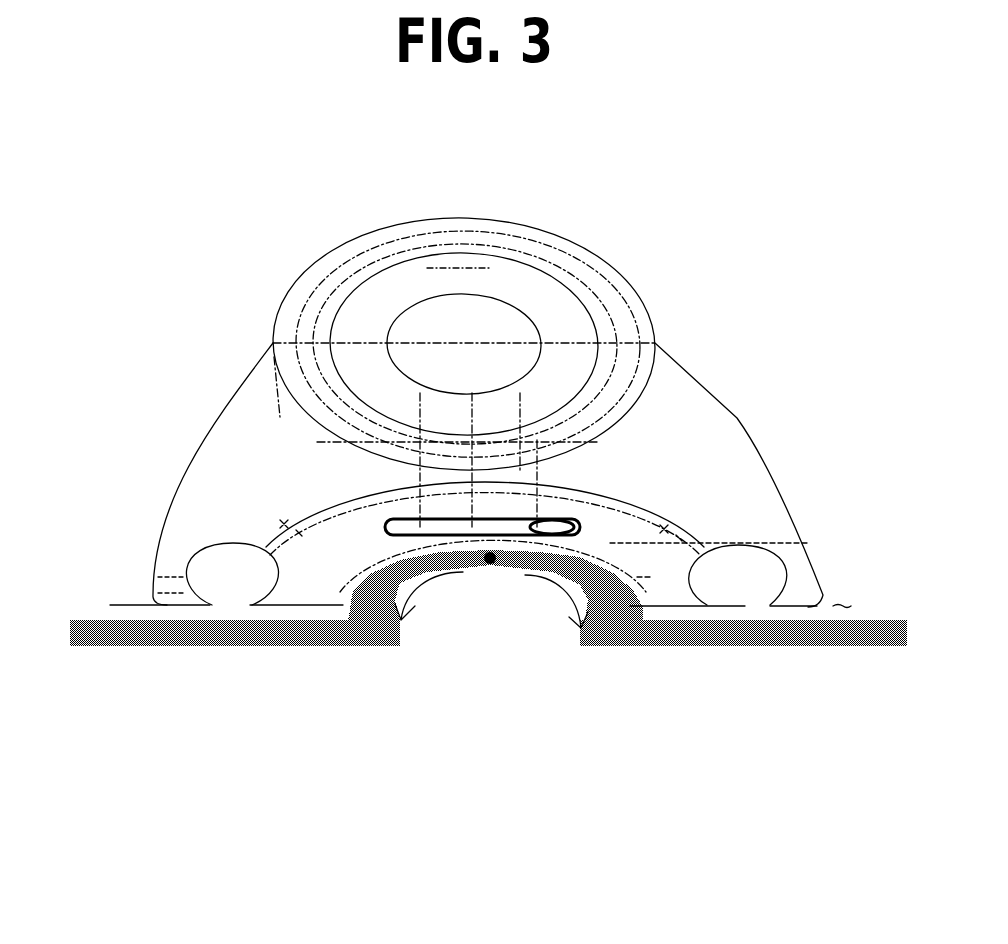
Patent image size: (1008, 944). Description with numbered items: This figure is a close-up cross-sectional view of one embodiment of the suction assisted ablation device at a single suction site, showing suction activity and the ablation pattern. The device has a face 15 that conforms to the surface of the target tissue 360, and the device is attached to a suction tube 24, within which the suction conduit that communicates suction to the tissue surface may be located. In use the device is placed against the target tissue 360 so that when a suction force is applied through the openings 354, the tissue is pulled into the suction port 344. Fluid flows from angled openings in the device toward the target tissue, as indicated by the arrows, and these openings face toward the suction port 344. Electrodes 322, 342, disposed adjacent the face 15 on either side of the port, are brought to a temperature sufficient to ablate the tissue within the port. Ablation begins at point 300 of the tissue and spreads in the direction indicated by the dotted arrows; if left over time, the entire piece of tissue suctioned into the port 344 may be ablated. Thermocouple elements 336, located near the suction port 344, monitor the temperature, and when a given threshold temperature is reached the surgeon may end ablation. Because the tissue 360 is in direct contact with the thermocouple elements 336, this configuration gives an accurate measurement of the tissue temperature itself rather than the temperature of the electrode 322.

The face 15 is at (643, 605).
The suction tube 24 is at (464, 369).
The point 300 is at (490, 558).
The electrode 322 is at (232, 574).
The thermocouple elements 336 is at (563, 523).
The electrode 342 is at (710, 574).
The suction port 344 is at (345, 591).
The openings 354 is at (482, 515).
The target tissue 360 is at (488, 633).